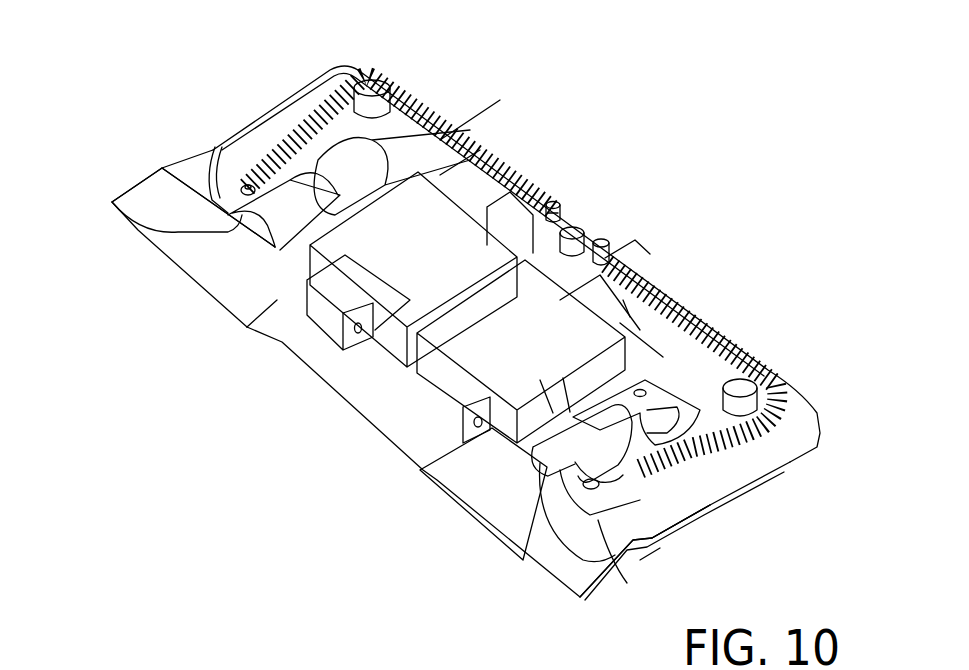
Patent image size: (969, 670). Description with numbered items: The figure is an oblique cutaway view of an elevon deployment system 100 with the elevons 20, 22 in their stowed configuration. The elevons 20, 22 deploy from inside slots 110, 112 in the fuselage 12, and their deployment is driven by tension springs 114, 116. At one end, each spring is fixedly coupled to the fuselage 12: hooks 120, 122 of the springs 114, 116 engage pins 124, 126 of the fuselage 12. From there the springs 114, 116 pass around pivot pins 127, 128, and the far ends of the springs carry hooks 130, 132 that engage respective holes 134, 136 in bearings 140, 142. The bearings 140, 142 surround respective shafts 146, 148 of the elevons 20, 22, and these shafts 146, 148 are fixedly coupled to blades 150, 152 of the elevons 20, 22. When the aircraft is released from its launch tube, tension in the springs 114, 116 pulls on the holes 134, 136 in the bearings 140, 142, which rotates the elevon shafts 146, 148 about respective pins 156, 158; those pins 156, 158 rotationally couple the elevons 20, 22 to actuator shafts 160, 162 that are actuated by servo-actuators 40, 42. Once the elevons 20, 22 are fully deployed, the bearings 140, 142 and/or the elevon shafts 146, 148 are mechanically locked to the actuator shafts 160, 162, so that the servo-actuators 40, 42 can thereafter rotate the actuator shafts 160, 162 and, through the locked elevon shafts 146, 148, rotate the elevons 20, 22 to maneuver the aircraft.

The elevon deployment system 100 is at (172, 72).
The slot 110 is at (200, 134).
The slot 112 is at (649, 582).
The tension spring 114 is at (420, 105).
The tension spring 116 is at (690, 298).
The hook 120 is at (578, 232).
The hook 122 is at (613, 250).
The pin 124 is at (553, 204).
The pin 126 is at (603, 243).
The pivot pin 127 is at (368, 88).
The pivot pin 128 is at (755, 388).
The hook 130 is at (248, 184).
The hook 132 is at (640, 482).
The hole 134 is at (242, 190).
The hole 136 is at (650, 565).
The bearing 140 is at (293, 193).
The bearing 142 is at (577, 505).
The elevon shaft 146 is at (112, 202).
The elevon shaft 148 is at (547, 470).
The blade 150 is at (240, 287).
The blade 152 is at (493, 493).
The pin 156 is at (398, 95).
The pin 158 is at (645, 392).
The actuator shaft 160 is at (373, 173).
The actuator shaft 162 is at (655, 418).
The fuselage 12 is at (303, 347).
The elevon 20 is at (170, 246).
The elevon 22 is at (597, 556).
The servo-actuator 40 is at (437, 205).
The servo-actuator 42 is at (640, 277).